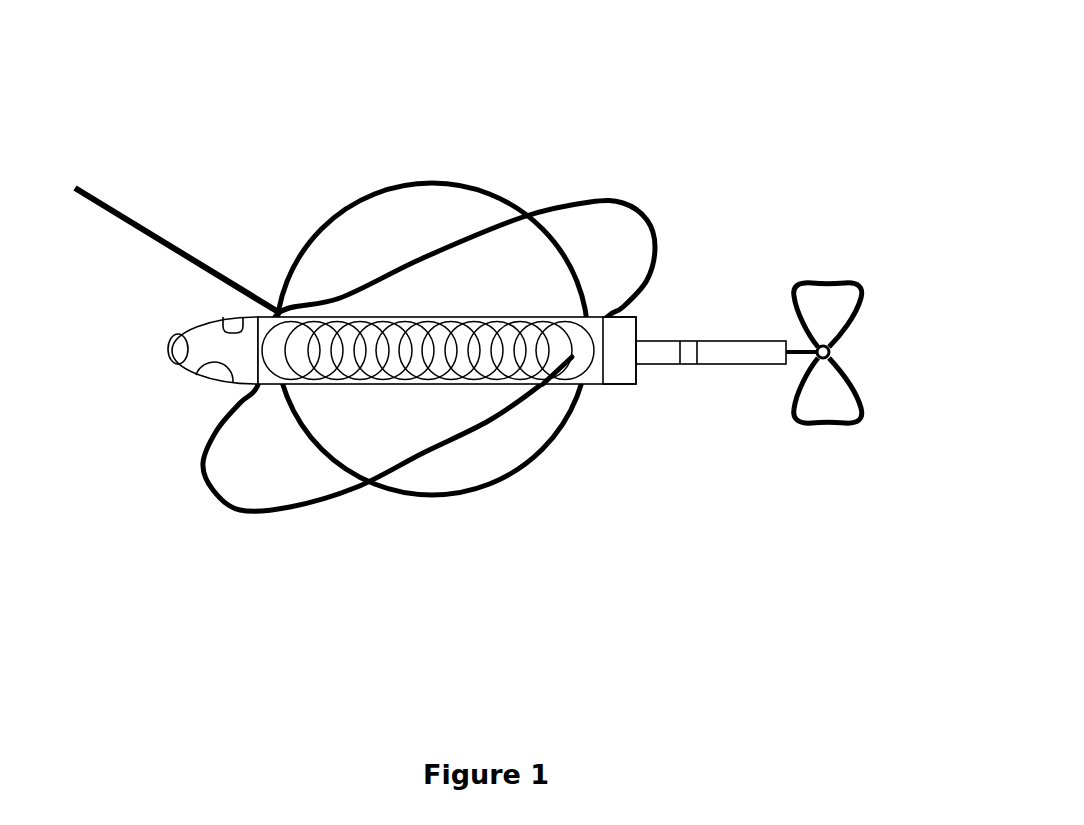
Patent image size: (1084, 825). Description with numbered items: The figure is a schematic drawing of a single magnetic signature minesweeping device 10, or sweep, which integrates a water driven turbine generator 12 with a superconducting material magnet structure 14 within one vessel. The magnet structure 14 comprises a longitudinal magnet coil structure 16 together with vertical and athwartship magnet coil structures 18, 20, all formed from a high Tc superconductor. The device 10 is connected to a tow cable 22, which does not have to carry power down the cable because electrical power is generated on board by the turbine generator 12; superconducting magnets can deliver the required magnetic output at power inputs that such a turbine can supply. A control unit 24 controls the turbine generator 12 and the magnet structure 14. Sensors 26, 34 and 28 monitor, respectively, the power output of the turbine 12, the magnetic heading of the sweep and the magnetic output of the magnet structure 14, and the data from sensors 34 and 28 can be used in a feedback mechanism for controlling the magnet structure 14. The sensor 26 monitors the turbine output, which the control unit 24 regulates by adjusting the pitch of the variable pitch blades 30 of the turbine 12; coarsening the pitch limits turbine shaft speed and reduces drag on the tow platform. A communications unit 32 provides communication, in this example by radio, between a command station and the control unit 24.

The minesweeping device 10 is at (818, 105).
The water driven turbine generator 12 is at (733, 345).
The superconducting material magnet structure 14 is at (472, 187).
The longitudinal magnet coil structure 16 is at (337, 362).
The vertical magnet coil structure 18 is at (328, 502).
The athwartship magnet coil structure 20 is at (463, 498).
The tow cable 22 is at (98, 197).
The control unit 24 is at (620, 372).
The sensor 26 is at (690, 340).
The sensor 28 is at (177, 345).
The variable pitch blades 30 is at (852, 390).
The communications unit 32 is at (235, 317).
The sensor 34 is at (218, 373).